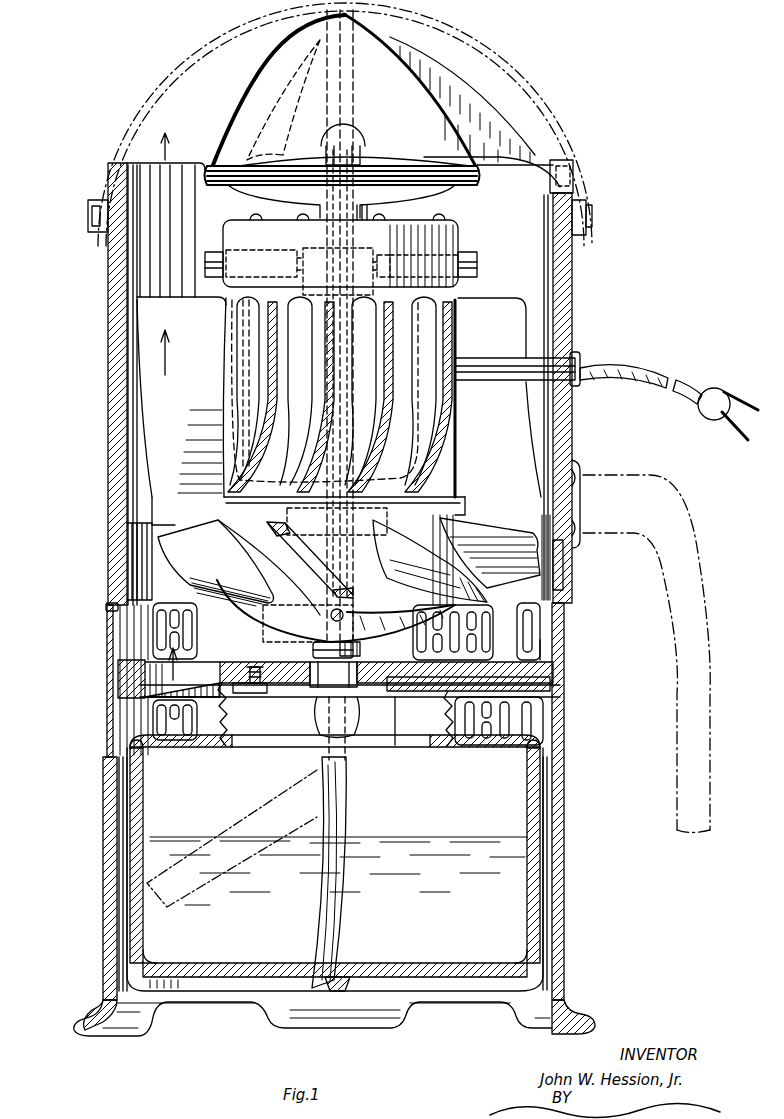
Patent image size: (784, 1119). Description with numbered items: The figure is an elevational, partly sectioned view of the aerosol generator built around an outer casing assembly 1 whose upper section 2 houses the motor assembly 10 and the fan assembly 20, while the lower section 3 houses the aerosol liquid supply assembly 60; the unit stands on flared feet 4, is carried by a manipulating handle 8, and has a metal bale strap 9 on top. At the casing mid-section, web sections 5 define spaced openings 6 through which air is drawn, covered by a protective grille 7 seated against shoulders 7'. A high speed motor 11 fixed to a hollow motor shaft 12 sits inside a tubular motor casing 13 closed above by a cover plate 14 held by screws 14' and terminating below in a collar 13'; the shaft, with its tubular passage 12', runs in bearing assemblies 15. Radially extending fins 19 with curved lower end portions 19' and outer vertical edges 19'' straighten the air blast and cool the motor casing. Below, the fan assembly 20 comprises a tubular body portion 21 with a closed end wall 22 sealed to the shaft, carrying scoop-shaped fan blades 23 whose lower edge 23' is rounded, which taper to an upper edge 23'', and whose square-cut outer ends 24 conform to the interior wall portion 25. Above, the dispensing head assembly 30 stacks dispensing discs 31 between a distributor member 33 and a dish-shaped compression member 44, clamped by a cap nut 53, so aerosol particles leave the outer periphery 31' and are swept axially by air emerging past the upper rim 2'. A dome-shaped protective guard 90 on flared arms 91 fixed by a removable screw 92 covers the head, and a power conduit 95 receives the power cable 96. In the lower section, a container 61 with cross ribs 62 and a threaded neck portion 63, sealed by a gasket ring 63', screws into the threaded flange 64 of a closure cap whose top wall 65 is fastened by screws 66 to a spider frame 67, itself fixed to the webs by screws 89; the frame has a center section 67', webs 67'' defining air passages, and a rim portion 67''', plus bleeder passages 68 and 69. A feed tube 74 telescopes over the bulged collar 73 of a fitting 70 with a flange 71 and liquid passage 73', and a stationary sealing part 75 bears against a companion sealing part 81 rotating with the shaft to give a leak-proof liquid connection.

The outer casing assembly 1 is at (97, 427).
The upper section 2 is at (153, 460).
The upper rim 2' is at (153, 143).
The lower section 3 is at (135, 6).
The flared feet 4 is at (102, 656).
The web sections 5 is at (140, 622).
The spaced openings 6 is at (130, 633).
The protective grille 7 is at (335, 688).
The spaced shoulders 7' is at (338, 681).
The manipulating handle 8 is at (708, 614).
The bale strap 9 is at (578, 98).
The motor assembly 10 is at (489, 292).
The high speed motor 11 is at (280, 486).
The hollow motor shaft 12 is at (363, 333).
The tubular passage 12' is at (357, 411).
The tubular motor casing 13 is at (477, 398).
The collar 13' is at (305, 560).
The cover plate 14 is at (351, 254).
The screws 14' is at (475, 217).
The bearing assemblies 15 is at (419, 561).
The radially extending fins 19 is at (338, 394).
The curved lower end portions 19' is at (191, 398).
The outer vertical edges 19'' is at (342, 358).
The fan assembly 20 is at (473, 510).
The tubular body portion 21 is at (250, 542).
The closed end wall 22 is at (252, 620).
The fan blades 23 is at (305, 552).
The lower edge 23' is at (271, 575).
The upper edge 23'' is at (122, 522).
The outer ends 24 is at (170, 562).
The interior wall portion 25 is at (165, 578).
The dispensing head assembly 30 is at (240, 197).
The dispensing discs 31 is at (357, 177).
The outer periphery 31' is at (199, 155).
The distributor member 33 is at (408, 192).
The compression member 44 is at (382, 160).
The cap nut 53 is at (362, 144).
The aerosol liquid supply assembly 60 is at (118, 810).
The container 61 is at (130, 905).
The cross ribs 62 is at (273, 992).
The threaded neck portion 63 is at (335, 714).
The gasket ring 63' is at (425, 707).
The threaded flange 64 is at (466, 748).
The top wall 65 is at (255, 694).
The screws 66 is at (250, 712).
The spider frame 67 is at (377, 682).
The center section 67' is at (377, 715).
The webs 67'' is at (114, 666).
The rim portion 67''' is at (98, 675).
The air bleeder passage 68 is at (540, 645).
The axial bleeder passage 69 is at (398, 703).
The fitting 70 is at (310, 746).
The laterally extending flange 71 is at (312, 712).
The bulged collar 73 is at (360, 735).
The liquid passage 73' is at (303, 778).
The feed tube 74 is at (265, 814).
The stationary part 75 is at (330, 654).
The companion sealing part 81 is at (368, 654).
The screws 89 is at (566, 690).
The dome-shaped protective guard 90 is at (283, 42).
The flared arms 91 is at (262, 82).
The removable screw 92 is at (578, 184).
The power conduit 95 is at (482, 375).
The power cable 96 is at (627, 372).